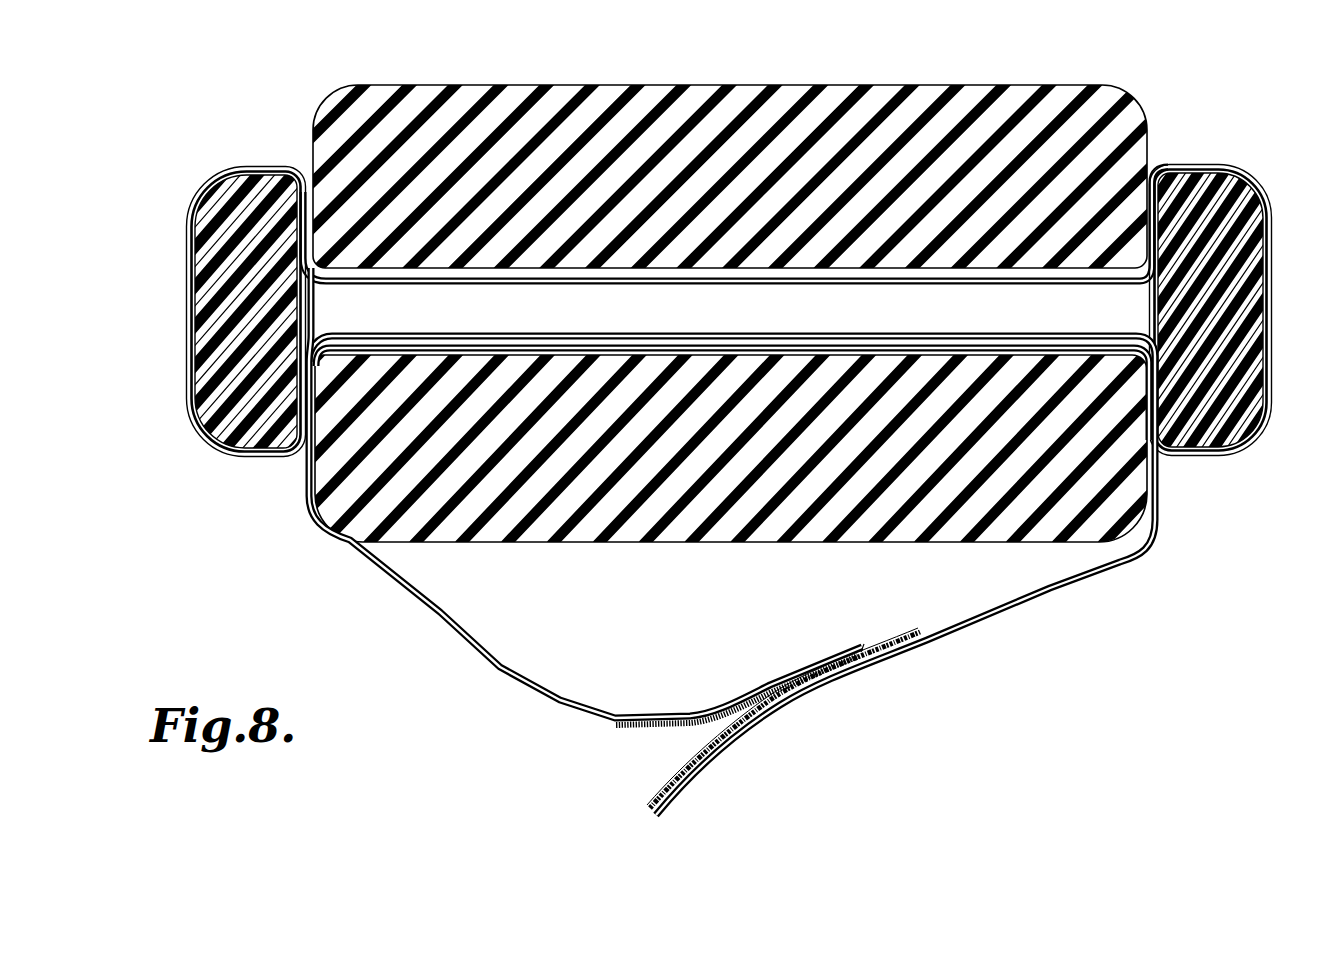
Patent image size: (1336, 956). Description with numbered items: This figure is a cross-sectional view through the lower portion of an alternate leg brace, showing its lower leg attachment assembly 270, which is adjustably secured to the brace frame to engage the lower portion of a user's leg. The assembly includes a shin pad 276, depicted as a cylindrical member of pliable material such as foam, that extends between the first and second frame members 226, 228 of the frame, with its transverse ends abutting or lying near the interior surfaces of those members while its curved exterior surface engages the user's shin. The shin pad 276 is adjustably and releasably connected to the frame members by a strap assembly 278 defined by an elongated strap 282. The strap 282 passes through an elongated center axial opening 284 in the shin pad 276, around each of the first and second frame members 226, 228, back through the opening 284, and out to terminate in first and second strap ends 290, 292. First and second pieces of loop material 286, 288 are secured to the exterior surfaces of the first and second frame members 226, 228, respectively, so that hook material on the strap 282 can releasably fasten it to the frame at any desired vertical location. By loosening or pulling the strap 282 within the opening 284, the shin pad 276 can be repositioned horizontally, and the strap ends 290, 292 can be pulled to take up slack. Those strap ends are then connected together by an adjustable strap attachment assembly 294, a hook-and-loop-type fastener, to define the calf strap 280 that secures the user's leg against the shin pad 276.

The first frame member 226 is at (248, 182).
The second frame member 228 is at (1230, 176).
The lower leg attachment assembly 270 is at (1173, 762).
The shin pad 276 is at (517, 88).
The strap assembly 278 is at (198, 444).
The calf strap 280 is at (508, 720).
The strap 282 is at (888, 283).
The center axial opening 284 is at (1085, 303).
The first piece of loop material 286 is at (1268, 290).
The second piece of loop material 288 is at (186, 269).
The first strap end 290 is at (412, 603).
The second strap end 292 is at (988, 612).
The adjustable strap attachment assembly 294 is at (758, 746).